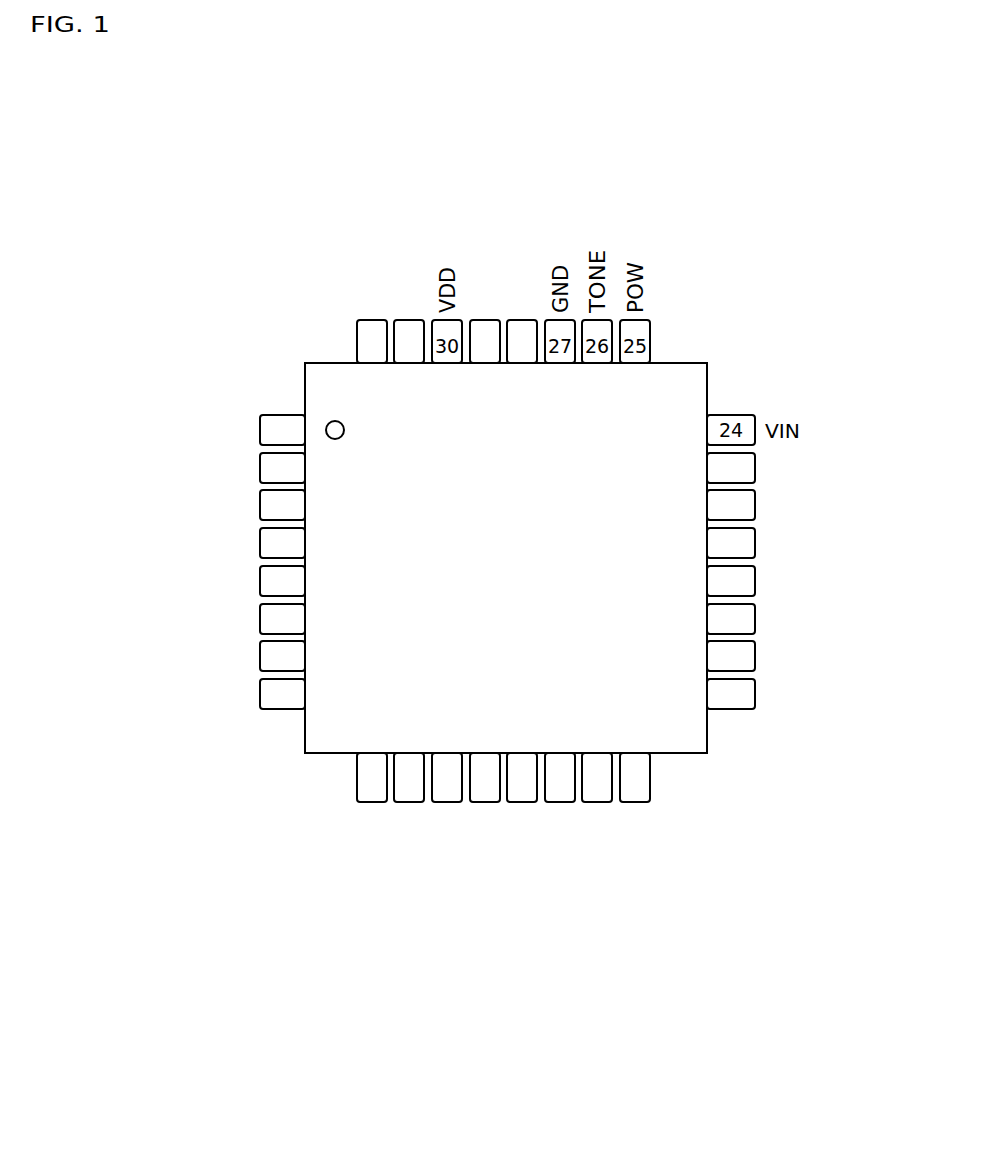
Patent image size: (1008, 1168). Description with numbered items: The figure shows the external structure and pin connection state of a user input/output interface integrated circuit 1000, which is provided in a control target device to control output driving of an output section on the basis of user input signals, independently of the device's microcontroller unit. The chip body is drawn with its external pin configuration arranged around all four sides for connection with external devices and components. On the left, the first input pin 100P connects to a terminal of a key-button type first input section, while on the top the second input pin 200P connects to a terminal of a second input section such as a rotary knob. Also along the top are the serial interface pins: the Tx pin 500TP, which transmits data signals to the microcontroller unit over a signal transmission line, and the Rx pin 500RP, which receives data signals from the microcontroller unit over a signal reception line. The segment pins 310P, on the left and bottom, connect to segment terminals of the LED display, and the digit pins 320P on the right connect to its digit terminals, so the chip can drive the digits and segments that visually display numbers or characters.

The integrated circuit 1000 is at (762, 277).
The first input pin 100P is at (217, 423).
The second input pin 200P is at (417, 265).
The segment pins 310P is at (157, 502).
The digit pins 320P is at (800, 463).
The Tx pin 500TP is at (483, 280).
The Rx pin 500RP is at (522, 282).